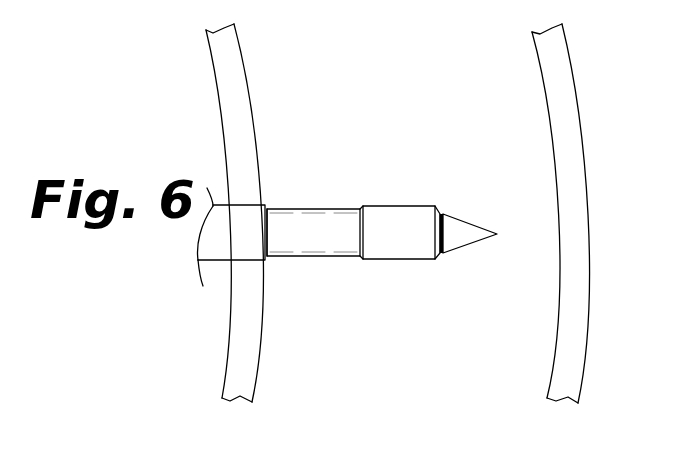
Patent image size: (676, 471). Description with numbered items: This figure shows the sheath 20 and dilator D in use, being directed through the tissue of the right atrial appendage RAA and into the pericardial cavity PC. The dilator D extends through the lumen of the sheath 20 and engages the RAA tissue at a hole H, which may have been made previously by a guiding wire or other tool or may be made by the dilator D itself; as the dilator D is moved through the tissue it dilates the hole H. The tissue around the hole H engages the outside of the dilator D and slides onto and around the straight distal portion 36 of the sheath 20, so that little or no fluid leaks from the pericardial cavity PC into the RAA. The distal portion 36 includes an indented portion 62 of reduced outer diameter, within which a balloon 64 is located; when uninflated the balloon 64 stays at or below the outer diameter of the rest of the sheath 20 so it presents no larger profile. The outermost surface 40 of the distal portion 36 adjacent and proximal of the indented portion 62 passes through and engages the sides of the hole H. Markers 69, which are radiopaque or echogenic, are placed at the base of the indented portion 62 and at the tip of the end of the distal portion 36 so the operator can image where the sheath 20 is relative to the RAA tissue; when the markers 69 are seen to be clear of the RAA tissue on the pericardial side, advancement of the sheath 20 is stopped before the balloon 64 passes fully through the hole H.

The right atrial appendage RAA is at (219, 43).
The pericardial cavity PC is at (423, 127).
The hole H is at (237, 262).
The sheath 20 is at (182, 248).
The outermost surface 40 is at (218, 203).
The balloon 64 is at (313, 254).
The distal portion 36 is at (408, 242).
The dilator D is at (452, 243).
The marker 69 is at (266, 234).
The indented portion 62 is at (309, 178).